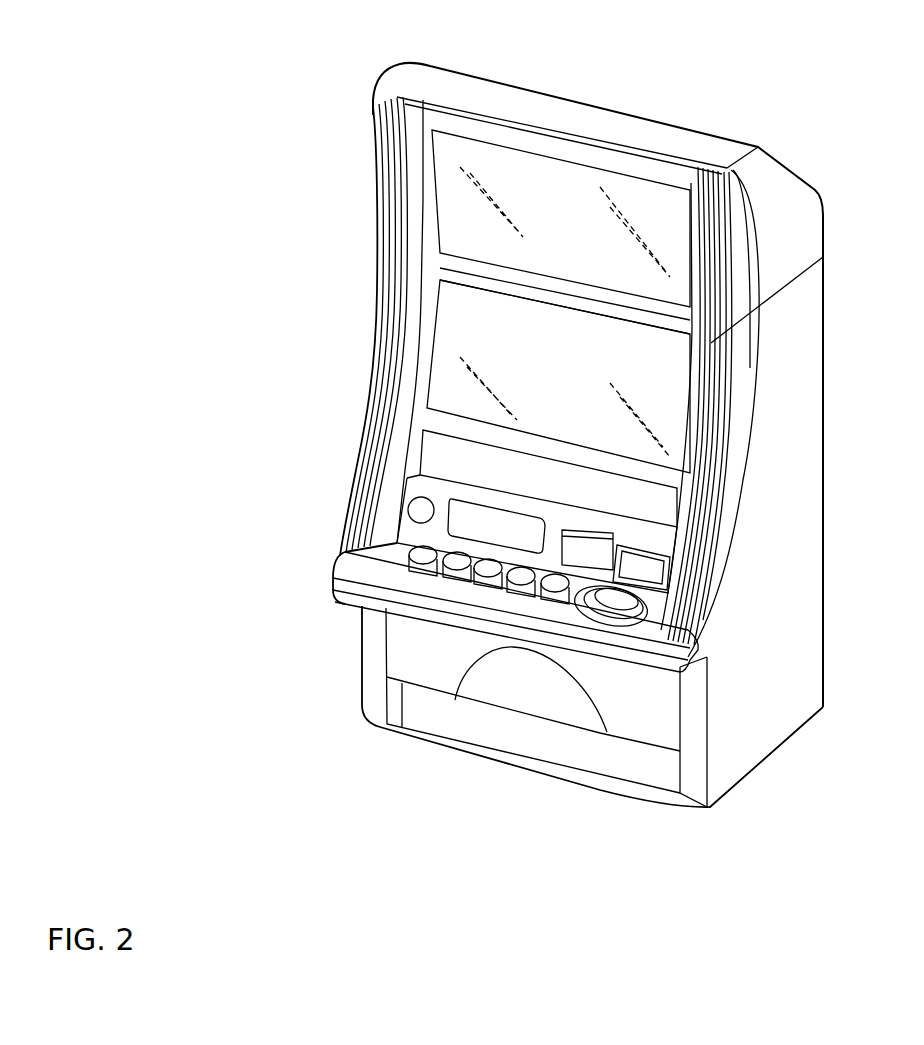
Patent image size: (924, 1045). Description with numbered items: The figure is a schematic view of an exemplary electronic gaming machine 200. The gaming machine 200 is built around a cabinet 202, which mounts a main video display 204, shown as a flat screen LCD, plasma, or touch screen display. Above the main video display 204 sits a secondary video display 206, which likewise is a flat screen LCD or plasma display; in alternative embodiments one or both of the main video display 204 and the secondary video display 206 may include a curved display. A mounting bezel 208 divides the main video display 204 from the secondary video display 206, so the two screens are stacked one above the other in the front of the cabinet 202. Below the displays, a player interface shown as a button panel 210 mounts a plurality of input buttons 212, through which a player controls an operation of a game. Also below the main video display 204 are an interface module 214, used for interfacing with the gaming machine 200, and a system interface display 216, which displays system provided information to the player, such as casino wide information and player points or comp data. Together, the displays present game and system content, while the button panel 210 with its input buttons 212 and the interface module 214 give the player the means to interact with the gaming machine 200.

The gaming machine 200 is at (786, 58).
The cabinet 202 is at (800, 407).
The main video display 204 is at (470, 353).
The secondary video display 206 is at (470, 180).
The mounting bezel 208 is at (470, 270).
The button panel 210 is at (341, 561).
The input buttons 212 is at (445, 577).
The interface module 214 is at (640, 566).
The system interface display 216 is at (500, 523).